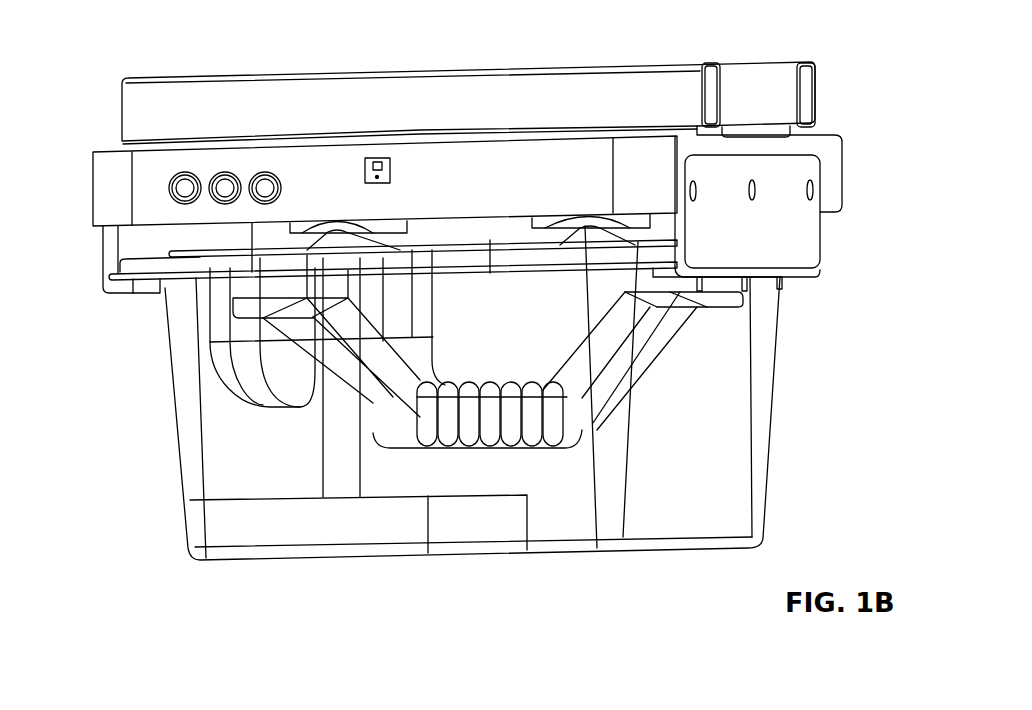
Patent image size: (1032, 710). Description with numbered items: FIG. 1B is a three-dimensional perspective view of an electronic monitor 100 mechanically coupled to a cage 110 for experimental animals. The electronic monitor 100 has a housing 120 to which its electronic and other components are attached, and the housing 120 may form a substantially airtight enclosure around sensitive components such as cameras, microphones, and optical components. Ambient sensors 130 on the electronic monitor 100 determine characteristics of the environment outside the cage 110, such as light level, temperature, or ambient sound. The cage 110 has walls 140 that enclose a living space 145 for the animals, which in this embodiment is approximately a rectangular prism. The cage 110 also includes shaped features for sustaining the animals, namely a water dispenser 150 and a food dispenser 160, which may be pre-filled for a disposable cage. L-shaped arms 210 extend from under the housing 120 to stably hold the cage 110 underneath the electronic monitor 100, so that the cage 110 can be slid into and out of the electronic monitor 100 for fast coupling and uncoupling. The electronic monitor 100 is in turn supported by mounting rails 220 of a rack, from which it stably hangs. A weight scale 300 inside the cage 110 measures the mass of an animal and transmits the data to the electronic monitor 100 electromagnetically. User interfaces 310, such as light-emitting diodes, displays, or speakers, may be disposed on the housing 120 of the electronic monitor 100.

The electronic monitor 100 is at (843, 168).
The cage 110 is at (773, 403).
The housing 120 is at (827, 130).
The ambient sensors 130 is at (378, 158).
The walls 140 is at (762, 450).
The living space 145 is at (700, 468).
The water dispenser 150 is at (220, 385).
The food dispenser 160 is at (398, 448).
The arms 210 is at (807, 250).
The mounting rails 220 is at (305, 76).
The weight scale 300 is at (230, 517).
The user interfaces 310 is at (150, 197).